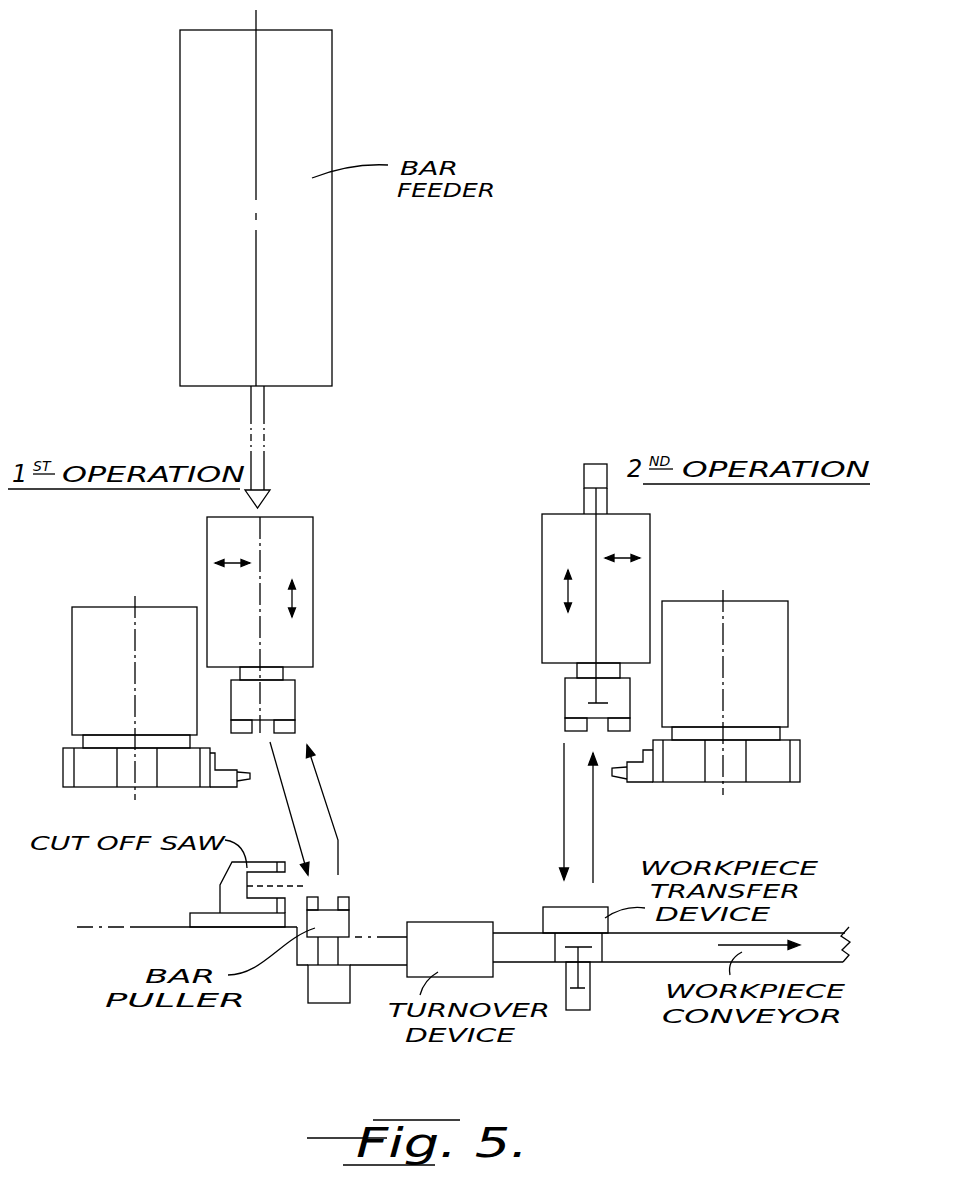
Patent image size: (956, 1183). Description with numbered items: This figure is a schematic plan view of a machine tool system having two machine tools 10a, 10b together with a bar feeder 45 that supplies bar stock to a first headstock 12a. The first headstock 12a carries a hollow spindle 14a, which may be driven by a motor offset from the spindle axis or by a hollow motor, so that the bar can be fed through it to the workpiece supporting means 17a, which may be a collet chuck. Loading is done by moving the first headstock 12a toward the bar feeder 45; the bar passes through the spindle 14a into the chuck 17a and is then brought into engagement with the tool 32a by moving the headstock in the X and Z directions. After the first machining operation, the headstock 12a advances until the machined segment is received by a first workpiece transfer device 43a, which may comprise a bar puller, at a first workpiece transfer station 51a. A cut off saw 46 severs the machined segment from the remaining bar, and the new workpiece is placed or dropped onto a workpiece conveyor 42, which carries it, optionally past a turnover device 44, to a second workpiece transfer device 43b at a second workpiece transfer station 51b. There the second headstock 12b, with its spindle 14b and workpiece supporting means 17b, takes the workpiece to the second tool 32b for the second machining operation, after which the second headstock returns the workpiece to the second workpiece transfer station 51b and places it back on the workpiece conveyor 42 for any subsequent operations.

The bar feeder 45 is at (326, 280).
The machine tool 10a is at (340, 530).
The first headstock 12a is at (306, 598).
The hollow spindle 14a is at (288, 673).
The workpiece supporting means 17a is at (290, 708).
The tool 32a is at (250, 776).
The cut off saw 46 is at (220, 893).
The first workpiece transfer device 43a is at (338, 918).
The first workpiece transfer station 51a is at (298, 960).
The turnover device 44 is at (460, 928).
The workpiece conveyor 42 is at (812, 933).
The second workpiece transfer device 43b is at (558, 912).
The second workpiece transfer station 51b is at (602, 968).
The machine tool 10b is at (528, 544).
The second headstock 12b is at (547, 618).
The spindle 14b is at (575, 668).
The workpiece supporting means 17b is at (573, 706).
The second tool 32b is at (612, 773).